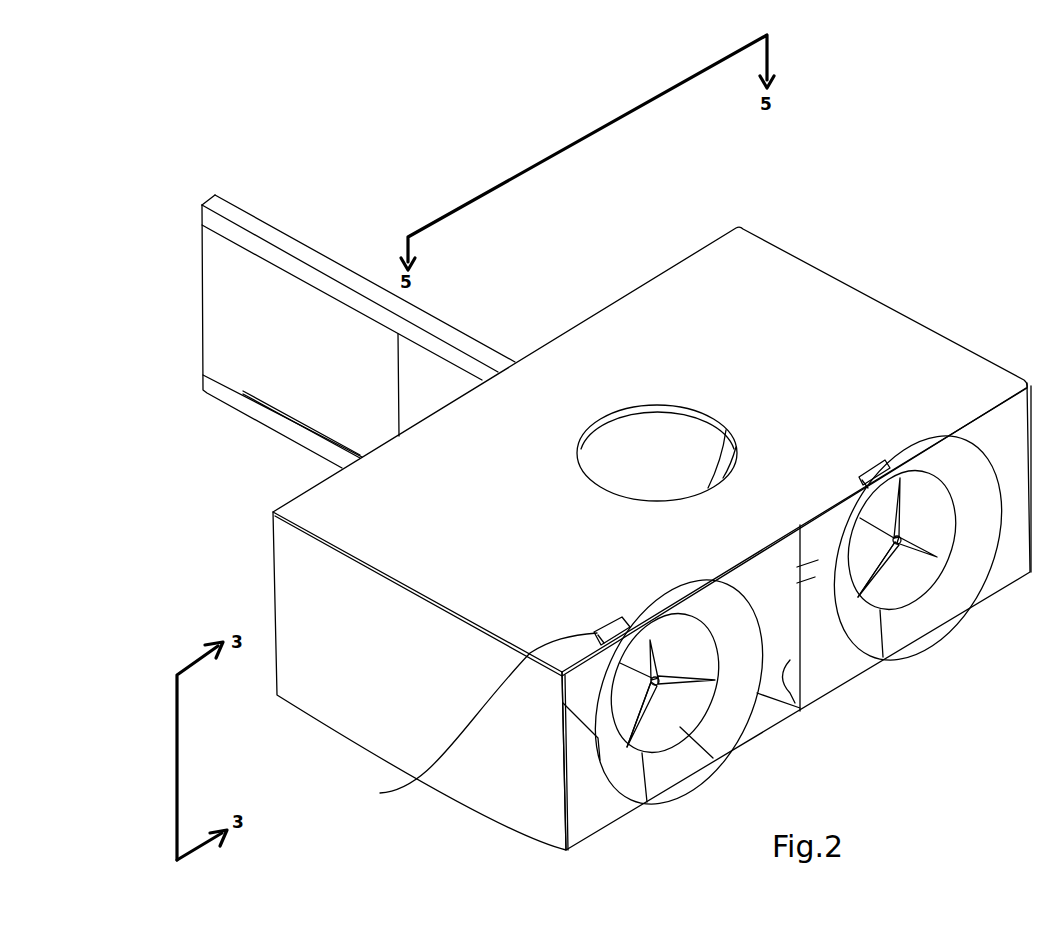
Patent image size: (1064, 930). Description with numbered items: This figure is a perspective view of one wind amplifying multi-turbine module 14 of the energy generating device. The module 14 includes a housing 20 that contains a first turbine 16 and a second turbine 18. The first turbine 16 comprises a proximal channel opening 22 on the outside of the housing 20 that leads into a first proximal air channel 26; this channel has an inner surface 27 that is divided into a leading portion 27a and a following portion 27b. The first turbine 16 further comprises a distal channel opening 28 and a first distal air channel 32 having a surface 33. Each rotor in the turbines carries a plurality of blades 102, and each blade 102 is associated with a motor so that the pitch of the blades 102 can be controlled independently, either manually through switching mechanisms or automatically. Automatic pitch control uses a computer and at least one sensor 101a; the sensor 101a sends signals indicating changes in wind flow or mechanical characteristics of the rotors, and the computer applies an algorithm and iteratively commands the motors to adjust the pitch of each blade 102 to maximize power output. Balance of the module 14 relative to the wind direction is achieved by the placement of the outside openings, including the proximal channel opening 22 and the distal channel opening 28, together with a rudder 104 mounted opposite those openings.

The wind amplifying multi-turbine module 14 is at (245, 573).
The first turbine 16 is at (963, 650).
The second turbine 18 is at (695, 805).
The housing 20 is at (965, 368).
The proximal channel opening 22 is at (923, 562).
The first proximal air channel 26 is at (697, 690).
The inner surface 27 is at (690, 717).
The leading portion 27a is at (690, 762).
The following portion 27b is at (913, 518).
The distal channel opening 28 is at (825, 643).
The first distal air channel 32 is at (585, 768).
The surface 33 is at (800, 700).
The sensor 101a is at (380, 793).
The blades 102 is at (898, 577).
The rudder 104 is at (250, 375).